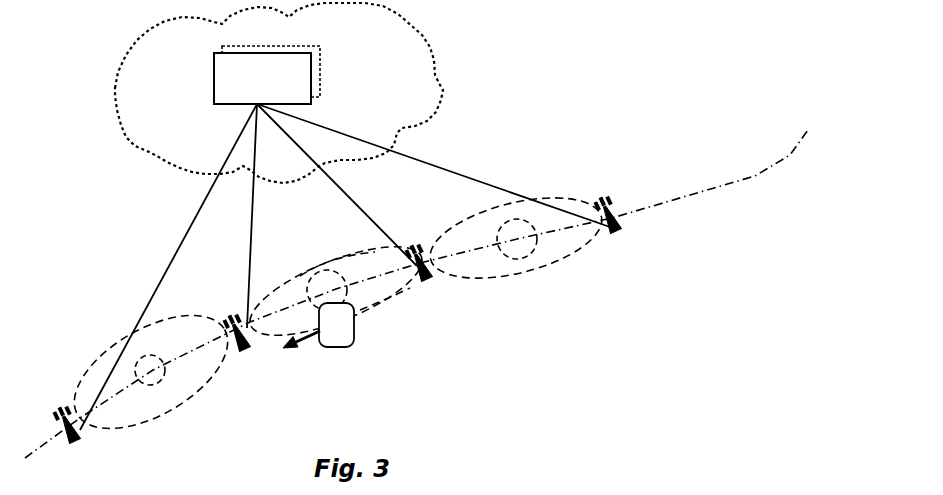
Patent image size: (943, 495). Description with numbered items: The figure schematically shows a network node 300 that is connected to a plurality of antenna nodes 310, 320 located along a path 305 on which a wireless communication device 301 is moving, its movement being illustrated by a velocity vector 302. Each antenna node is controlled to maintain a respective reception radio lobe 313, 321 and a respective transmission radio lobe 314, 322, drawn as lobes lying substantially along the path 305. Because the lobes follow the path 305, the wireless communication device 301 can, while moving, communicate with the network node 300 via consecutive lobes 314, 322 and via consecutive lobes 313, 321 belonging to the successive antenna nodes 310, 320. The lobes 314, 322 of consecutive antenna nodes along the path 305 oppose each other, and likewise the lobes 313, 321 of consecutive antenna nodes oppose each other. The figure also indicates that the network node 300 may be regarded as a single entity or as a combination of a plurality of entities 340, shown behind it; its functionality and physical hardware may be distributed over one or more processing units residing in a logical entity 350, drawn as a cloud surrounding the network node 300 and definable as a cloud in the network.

The network node 300 is at (214, 88).
The plurality of entities 340 is at (320, 76).
The logical entity 350 is at (443, 90).
The path 305 is at (692, 195).
The antenna node 310 is at (232, 318).
The reception radio lobe 313 is at (305, 277).
The transmission radio lobe 314 is at (270, 342).
The antenna node 320 is at (417, 250).
The reception radio lobe 321 is at (350, 257).
The transmission radio lobe 322 is at (392, 295).
The wireless communication device 301 is at (348, 347).
The velocity vector 302 is at (303, 349).